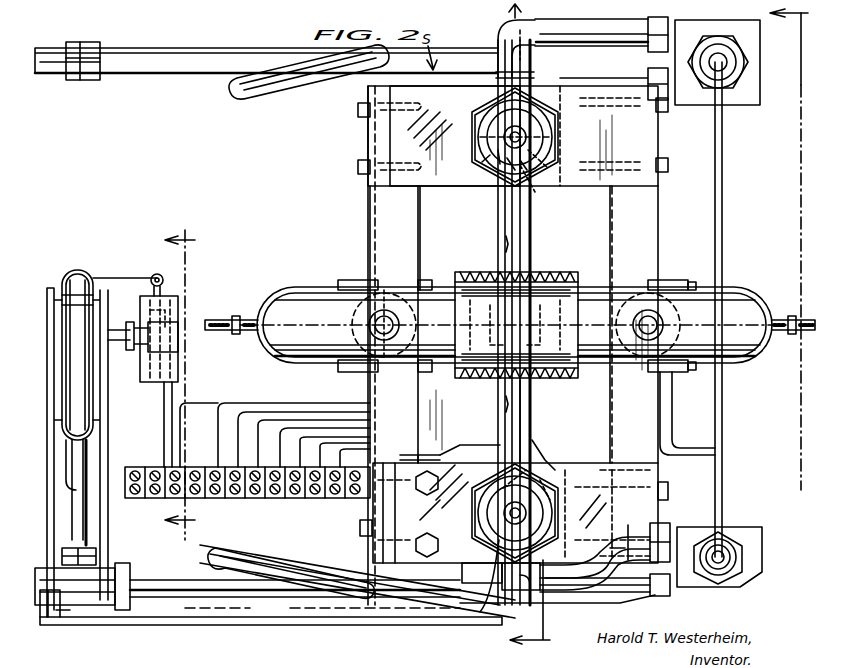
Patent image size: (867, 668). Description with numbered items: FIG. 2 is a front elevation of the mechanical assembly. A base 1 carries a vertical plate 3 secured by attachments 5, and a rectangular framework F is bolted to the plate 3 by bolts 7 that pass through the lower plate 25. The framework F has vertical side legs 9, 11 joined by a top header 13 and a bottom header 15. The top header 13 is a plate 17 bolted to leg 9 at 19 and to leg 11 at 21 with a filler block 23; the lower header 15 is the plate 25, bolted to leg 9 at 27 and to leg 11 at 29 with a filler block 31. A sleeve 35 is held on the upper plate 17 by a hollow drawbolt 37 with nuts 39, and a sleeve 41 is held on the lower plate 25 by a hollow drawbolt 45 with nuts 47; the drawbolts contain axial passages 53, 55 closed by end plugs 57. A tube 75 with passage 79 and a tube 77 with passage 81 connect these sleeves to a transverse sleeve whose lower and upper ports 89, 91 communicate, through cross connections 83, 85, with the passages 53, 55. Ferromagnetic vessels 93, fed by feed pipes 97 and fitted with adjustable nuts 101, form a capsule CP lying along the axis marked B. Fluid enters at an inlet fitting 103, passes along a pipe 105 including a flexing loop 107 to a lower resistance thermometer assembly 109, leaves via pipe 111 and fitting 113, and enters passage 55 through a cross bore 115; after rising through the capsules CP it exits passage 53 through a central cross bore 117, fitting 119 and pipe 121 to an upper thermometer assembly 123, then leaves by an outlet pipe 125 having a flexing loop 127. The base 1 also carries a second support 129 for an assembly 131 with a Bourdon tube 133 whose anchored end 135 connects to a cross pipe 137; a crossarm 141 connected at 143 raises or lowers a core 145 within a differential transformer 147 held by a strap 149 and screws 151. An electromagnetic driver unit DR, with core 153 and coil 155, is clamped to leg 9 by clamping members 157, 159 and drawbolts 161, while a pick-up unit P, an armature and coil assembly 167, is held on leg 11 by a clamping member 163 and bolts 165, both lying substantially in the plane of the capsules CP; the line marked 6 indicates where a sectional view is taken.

The base 1 is at (176, 624).
The vertical plate 3 is at (290, 544).
The attachments 5 is at (228, 620).
The section line 6- 6 is at (186, 385).
The bolts 7 is at (428, 534).
The vertical side leg 9 is at (368, 192).
The vertical side leg 11 is at (658, 190).
The top header 13 is at (474, 196).
The bottom header 15 is at (478, 450).
The plate 17 is at (434, 154).
The bolted connection 19 is at (364, 118).
The bolted connection 21 is at (663, 114).
The filler block 23 is at (582, 184).
The plate 25 is at (501, 576).
The bolted connection 27 is at (366, 520).
The attachment 29 is at (668, 528).
The filler block 31 is at (592, 476).
The sleeve 35 is at (492, 105).
The hollow drawbolt 37 is at (486, 128).
The nuts 39 is at (480, 166).
The sleeve 41 is at (468, 546).
The hollow drawbolt 45 is at (490, 520).
The nuts 47 is at (440, 484).
The axial passage 53 is at (536, 170).
The axial passage 55 is at (531, 494).
The end plugs 57 is at (504, 135).
The tube 75 is at (532, 218).
The tube 77 is at (530, 404).
The passage 79 is at (505, 242).
The passage 81 is at (505, 402).
The cross connection 83 is at (487, 150).
The cross connection 85 is at (546, 446).
The lower transverse port 89 is at (500, 346).
The upper transverse port 91 is at (500, 316).
The vessel 93 is at (298, 288).
The feed pipe 97 is at (272, 350).
The adjustable nut 101 is at (234, 318).
The inlet fitting 103 is at (100, 615).
The lower pipe 105 is at (150, 584).
The flexing loop 107 is at (282, 564).
The lower electric resistance thermometer assembly 109 is at (773, 537).
The pipe 111 is at (620, 545).
The fitting 113 is at (500, 608).
The cross bore 115 is at (600, 560).
The central cross bore 117 is at (528, 95).
The fitting 119 is at (498, 50).
The pipe 121 is at (566, 44).
The upper resistance thermometer assembly 123 is at (742, 105).
The outlet pipe 125 is at (145, 62).
The flexing loop 127 is at (292, 96).
The second support 129 is at (86, 520).
The assembly 131 is at (106, 410).
The Bourdon pressure-responsive tube 133 is at (78, 270).
The anchored end 135 is at (84, 452).
The cross pipe 137 is at (86, 538).
The crossarm 141 is at (124, 278).
The connection 143 is at (157, 274).
The ferromagnetic core 145 is at (150, 312).
The differential transformer 147 is at (144, 368).
The hold-down strap 149 is at (180, 342).
The screws 151 is at (138, 328).
The insulated ferromagnetic core 153 is at (420, 330).
The coil 155 is at (350, 322).
The clamping member 157 is at (378, 375).
The clamping member 159 is at (426, 282).
The drawbolts 161 is at (338, 286).
The clamping member 163 is at (674, 282).
The bolts 165 is at (692, 284).
The armature and coil assembly 167 is at (612, 290).
The rectangular framework F is at (358, 221).
The signal pick-up unit P is at (640, 280).
The capsule CP is at (410, 274).
The electromagnetic driver unit DR is at (364, 278).
The axis B is at (474, 325).